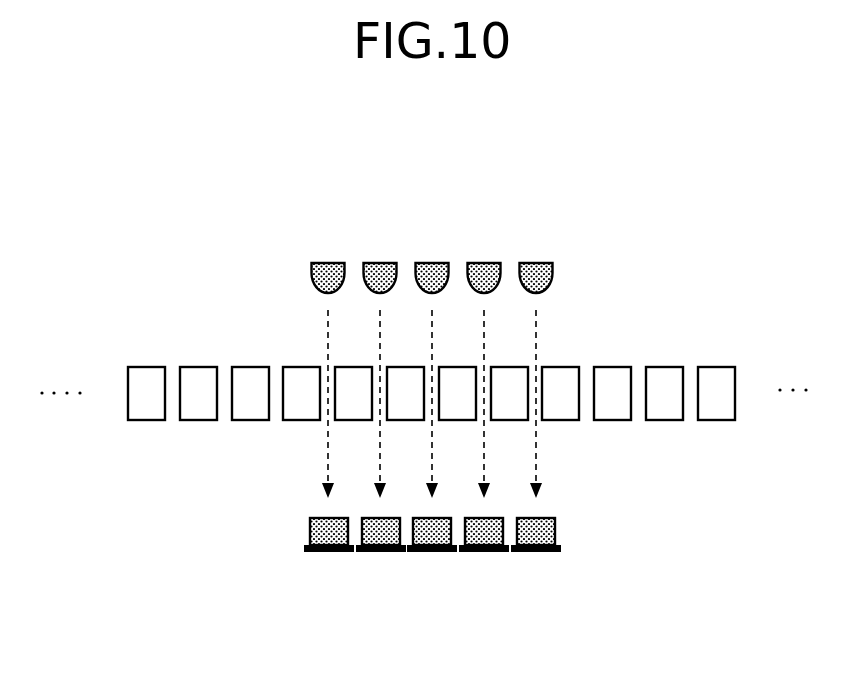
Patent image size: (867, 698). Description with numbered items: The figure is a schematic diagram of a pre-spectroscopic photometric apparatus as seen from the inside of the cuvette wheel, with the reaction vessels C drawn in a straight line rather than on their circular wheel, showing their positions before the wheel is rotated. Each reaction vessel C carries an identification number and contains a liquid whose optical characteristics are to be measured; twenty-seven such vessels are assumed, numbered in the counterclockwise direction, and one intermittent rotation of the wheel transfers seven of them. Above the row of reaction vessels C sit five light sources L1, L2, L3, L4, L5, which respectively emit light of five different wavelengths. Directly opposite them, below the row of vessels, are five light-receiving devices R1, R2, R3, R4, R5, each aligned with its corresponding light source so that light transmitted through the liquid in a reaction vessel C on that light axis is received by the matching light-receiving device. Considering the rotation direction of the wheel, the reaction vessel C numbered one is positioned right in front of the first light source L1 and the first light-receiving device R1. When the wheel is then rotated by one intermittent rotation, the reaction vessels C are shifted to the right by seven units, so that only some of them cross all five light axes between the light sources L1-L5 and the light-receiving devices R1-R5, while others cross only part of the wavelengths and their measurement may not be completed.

The light source L1 is at (328, 263).
The light source L2 is at (380, 263).
The light source L3 is at (432, 263).
The light source L4 is at (484, 263).
The light source L5 is at (536, 263).
The light-receiving device R1 is at (328, 552).
The light-receiving device R2 is at (377, 552).
The light-receiving device R3 is at (432, 552).
The light-receiving device R4 is at (480, 552).
The light-receiving device R5 is at (533, 552).
The reaction vessel C is at (197, 420).